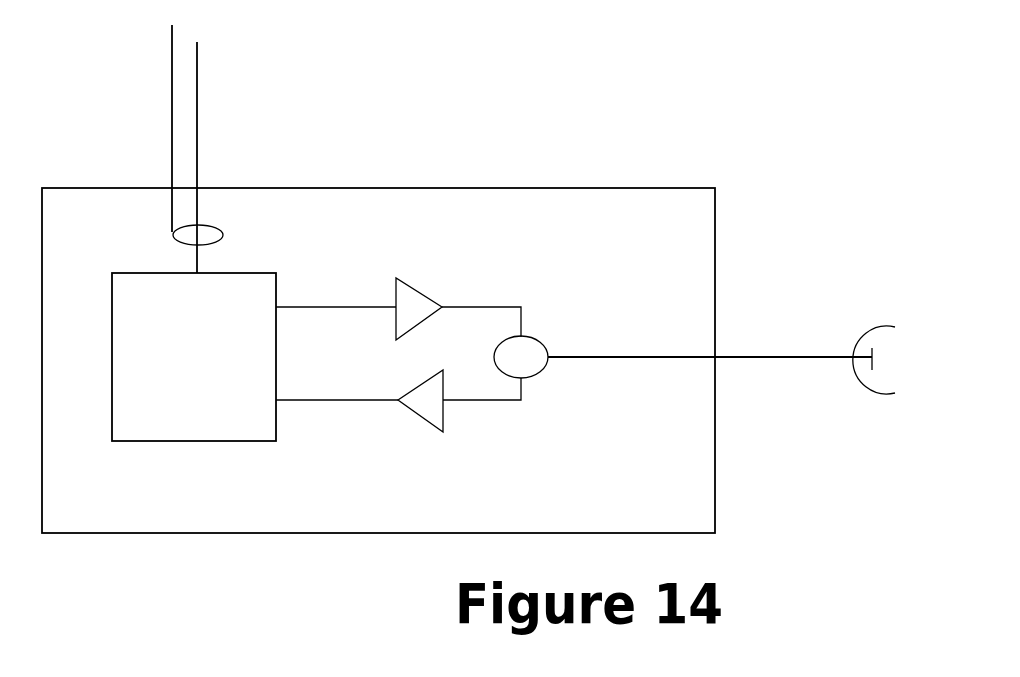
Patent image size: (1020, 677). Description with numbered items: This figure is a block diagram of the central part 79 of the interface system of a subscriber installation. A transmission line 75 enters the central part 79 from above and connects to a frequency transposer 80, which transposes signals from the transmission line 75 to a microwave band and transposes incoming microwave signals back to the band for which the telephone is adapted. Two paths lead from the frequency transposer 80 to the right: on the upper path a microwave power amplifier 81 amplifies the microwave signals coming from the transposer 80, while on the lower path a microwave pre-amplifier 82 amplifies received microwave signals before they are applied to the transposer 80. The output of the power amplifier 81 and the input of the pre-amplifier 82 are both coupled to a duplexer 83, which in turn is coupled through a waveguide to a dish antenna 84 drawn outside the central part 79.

The transmission line 75 is at (197, 112).
The central part 79 is at (640, 207).
The frequency transposer 80 is at (194, 357).
The microwave power amplifier 81 is at (417, 302).
The microwave pre-amplifier 82 is at (440, 422).
The duplexer 83 is at (537, 355).
The dish antenna 84 is at (863, 330).